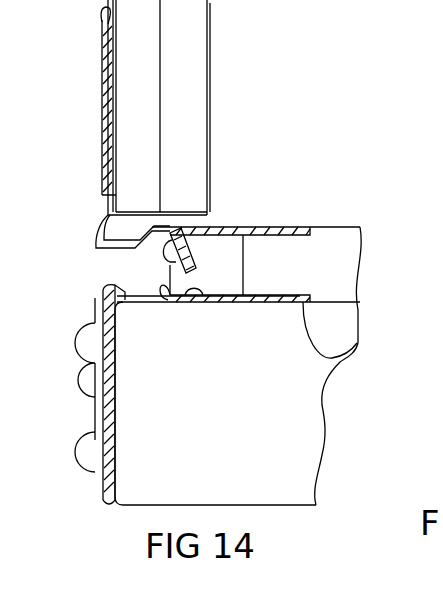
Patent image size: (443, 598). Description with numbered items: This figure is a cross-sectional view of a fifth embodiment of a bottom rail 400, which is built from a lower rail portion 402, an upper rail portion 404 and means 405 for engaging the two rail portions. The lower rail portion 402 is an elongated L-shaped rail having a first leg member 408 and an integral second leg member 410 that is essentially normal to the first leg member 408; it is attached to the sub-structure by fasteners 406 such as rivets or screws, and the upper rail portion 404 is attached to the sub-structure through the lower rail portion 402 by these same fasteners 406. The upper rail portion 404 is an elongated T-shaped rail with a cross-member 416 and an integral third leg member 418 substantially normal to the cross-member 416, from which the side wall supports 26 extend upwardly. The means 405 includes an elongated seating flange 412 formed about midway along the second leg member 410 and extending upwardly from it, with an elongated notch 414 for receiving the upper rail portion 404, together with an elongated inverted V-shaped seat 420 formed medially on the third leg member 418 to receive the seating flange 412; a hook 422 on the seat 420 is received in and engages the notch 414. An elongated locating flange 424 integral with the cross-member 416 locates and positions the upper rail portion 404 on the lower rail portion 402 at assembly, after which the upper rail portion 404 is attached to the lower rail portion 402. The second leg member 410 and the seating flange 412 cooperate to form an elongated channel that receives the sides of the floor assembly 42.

The side wall supports 26 is at (208, 0).
The floor assembly 42 is at (356, 227).
The bottom rail 400 is at (104, 136).
The lower rail portion 402 is at (100, 492).
The upper rail portion 404 is at (102, 38).
The means for engaging the lower rail portion and the upper rail portion 405 is at (150, 260).
The fasteners 406 is at (92, 428).
The first leg member 408 is at (118, 396).
The second leg member 410 is at (335, 368).
The seating flange 412 is at (166, 300).
The notch 414 is at (195, 303).
The cross-member 416 is at (102, 188).
The third leg member 418 is at (172, 236).
The inverted V-shaped seat 420 is at (187, 240).
The hook 422 is at (168, 248).
The locating flange 424 is at (100, 292).